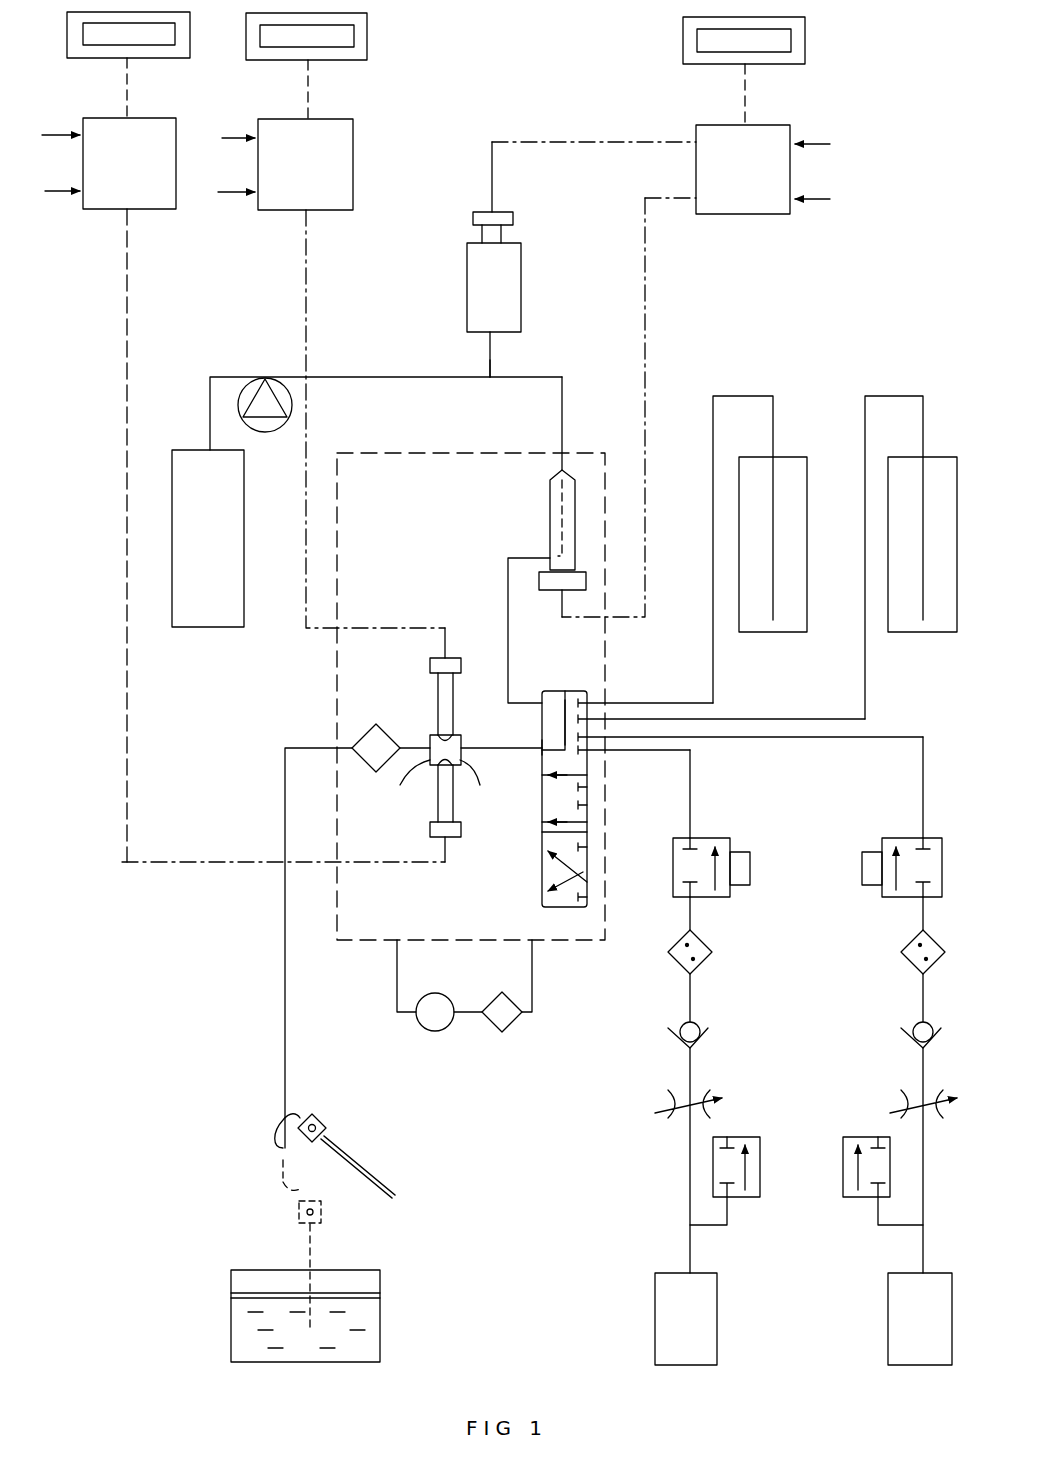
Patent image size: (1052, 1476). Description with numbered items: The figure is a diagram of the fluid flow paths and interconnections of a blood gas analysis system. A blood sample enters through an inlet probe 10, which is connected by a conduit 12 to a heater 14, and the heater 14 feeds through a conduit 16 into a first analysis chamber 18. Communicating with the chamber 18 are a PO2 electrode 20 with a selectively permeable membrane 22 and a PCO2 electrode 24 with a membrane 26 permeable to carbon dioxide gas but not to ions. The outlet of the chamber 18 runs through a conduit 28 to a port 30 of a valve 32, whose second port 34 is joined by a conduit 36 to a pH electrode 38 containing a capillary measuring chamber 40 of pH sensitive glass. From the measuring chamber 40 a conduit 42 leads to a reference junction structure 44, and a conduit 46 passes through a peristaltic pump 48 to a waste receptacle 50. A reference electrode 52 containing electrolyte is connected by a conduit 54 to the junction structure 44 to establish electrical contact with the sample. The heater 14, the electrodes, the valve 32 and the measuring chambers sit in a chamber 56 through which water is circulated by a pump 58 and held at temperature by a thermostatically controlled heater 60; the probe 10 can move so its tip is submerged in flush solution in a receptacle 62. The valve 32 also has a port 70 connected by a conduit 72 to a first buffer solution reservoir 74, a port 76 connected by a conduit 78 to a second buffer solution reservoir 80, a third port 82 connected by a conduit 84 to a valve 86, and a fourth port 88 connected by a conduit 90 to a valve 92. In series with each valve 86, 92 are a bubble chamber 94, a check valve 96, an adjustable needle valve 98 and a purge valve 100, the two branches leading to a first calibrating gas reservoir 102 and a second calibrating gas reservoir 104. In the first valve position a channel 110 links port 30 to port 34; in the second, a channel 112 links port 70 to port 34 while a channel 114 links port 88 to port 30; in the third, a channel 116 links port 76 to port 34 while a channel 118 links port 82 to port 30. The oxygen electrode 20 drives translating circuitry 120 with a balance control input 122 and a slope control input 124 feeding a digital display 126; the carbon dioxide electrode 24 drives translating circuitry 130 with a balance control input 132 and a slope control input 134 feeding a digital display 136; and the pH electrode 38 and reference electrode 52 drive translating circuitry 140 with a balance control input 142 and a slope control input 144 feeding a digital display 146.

The inlet probe 10 is at (312, 1240).
The conduit 12 is at (282, 1012).
The heater 14 is at (362, 738).
The conduit 16 is at (407, 747).
The first analysis chamber 18 is at (477, 783).
The PO2 electrode 20 is at (438, 698).
The selectively permeable membrane 22 is at (432, 747).
The PCO2 electrode 24 is at (437, 802).
The membrane 26 is at (406, 783).
The conduit 28 is at (473, 747).
The port 30 is at (542, 750).
The valve 32 is at (537, 832).
The second port 34 is at (543, 703).
The conduit 36 is at (508, 597).
The pH electrode 38 is at (550, 533).
The capillary section measuring chamber 40 is at (560, 505).
The conduit 42 is at (563, 399).
The reference junction structure 44 is at (495, 377).
The conduit 46 is at (405, 377).
The peristaltic pump 48 is at (264, 433).
The waste receptacle 50 is at (208, 628).
The reference electrode 52 is at (521, 275).
The conduit 54 is at (487, 351).
The chamber 56 is at (373, 943).
The pump 58 is at (443, 1030).
The thermostatically controlled heater 60 is at (514, 1024).
The receptacle 62 is at (380, 1317).
The port 70 is at (588, 703).
The conduit 72 is at (715, 671).
The first buffer solution reservoir 74 is at (770, 634).
The port 76 is at (588, 719).
The conduit 78 is at (867, 671).
The second buffer solution reservoir 80 is at (913, 634).
The third port 82 is at (588, 737).
The conduit 84 is at (922, 771).
The valve 86 is at (881, 838).
The fourth port 88 is at (588, 750).
The conduit 90 is at (691, 771).
The valve 92 is at (733, 838).
The bubble chamber 94 is at (709, 953).
The check valve 96 is at (697, 1022).
The adjustable needle valve 98 is at (680, 1095).
The purge valve 100 is at (760, 1137).
The first calibrating gas reservoir 102 is at (888, 1310).
The second calibrating gas reservoir 104 is at (653, 1316).
The channel 110 is at (567, 717).
The channel 112 is at (565, 773).
The channel 114 is at (565, 820).
The channel 116 is at (565, 856).
The channel 118 is at (567, 880).
The translating circuitry 120 is at (328, 213).
The balance control input 122 is at (233, 136).
The slope control input 124 is at (227, 193).
The digital display 126 is at (343, 61).
The translating circuitry 130 is at (146, 211).
The balance control input 132 is at (55, 133).
The slope control input 134 is at (55, 192).
The digital display 136 is at (143, 59).
The translating circuitry 140 is at (730, 215).
The balance control input 142 is at (819, 143).
The slope control input 144 is at (812, 200).
The digital display 146 is at (717, 64).